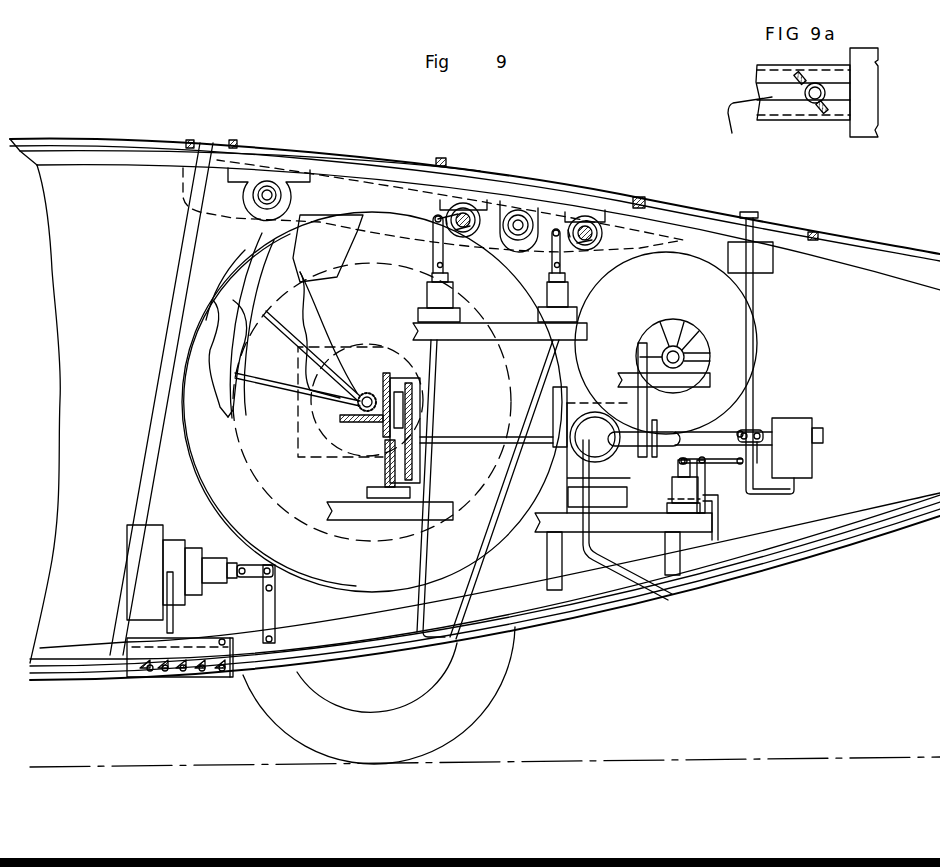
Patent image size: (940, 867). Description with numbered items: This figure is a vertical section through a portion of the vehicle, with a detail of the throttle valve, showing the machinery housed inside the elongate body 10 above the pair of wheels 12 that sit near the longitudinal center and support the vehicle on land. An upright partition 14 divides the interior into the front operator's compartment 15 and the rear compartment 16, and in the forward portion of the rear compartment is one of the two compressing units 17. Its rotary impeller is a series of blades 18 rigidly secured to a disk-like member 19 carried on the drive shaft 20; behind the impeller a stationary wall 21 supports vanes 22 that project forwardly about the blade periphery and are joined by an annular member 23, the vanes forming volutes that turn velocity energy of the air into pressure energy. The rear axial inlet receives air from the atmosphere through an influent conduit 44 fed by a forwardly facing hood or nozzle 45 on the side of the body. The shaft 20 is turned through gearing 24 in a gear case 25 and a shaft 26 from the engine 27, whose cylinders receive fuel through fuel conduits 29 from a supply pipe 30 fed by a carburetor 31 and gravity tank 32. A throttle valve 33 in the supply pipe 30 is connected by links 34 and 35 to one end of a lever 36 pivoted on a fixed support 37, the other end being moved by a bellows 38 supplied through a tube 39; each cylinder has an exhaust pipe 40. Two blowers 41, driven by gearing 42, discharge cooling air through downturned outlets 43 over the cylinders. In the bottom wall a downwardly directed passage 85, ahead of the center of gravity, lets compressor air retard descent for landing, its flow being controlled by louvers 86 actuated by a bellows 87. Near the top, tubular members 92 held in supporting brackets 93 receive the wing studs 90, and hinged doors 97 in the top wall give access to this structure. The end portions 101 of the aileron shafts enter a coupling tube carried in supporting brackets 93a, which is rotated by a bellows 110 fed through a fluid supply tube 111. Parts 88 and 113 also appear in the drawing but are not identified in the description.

In FIG. 9, the body 10 is at (887, 540).
In FIG. 9, the wheels 12 is at (477, 678).
In FIG. 9, the upright partition 14 is at (190, 250).
In FIG. 9, the operator's compartment 15 is at (70, 495).
In FIG. 9, the rear compartment 16 is at (172, 490).
In FIG. 9, the compressing unit 17 is at (200, 415).
In FIG. 9, the blades 18 is at (305, 342).
In FIG. 9, the disk-like member 19 is at (317, 298).
In FIG. 9, the drive shaft 20 is at (362, 410).
In FIG. 9, the stationary wall 21 is at (238, 292).
In FIG. 9, the vanes 22 is at (287, 280).
In FIG. 9, the annular member 23 is at (223, 343).
In FIG. 9, the gearing 24 is at (410, 418).
In FIG. 9, the gear case 25 is at (410, 390).
In FIG. 9, the shaft 26 is at (482, 440).
In FIG. 9, the engine 27 is at (574, 452).
In FIG. 9, the fuel conduits 29 is at (641, 448).
In FIG. 9, the supply pipe 30 is at (722, 434).
In FIG. 9a, the supply pipe 30 is at (790, 120).
In FIG. 9, the carburetor 31 is at (802, 423).
In FIG. 9a, the carburetor 31 is at (865, 140).
In FIG. 9, the gravity tank 32 is at (765, 263).
In FIG. 9, the throttle valve 33 is at (757, 446).
In FIG. 9a, the throttle valve 33 is at (821, 108).
In FIG. 9, the link 34 is at (759, 430).
In FIG. 9a, the link 34 is at (748, 126).
In FIG. 9, the link 35 is at (740, 465).
In FIG. 9, the lever 36 is at (722, 464).
In FIG. 9, the fixed support 37 is at (703, 493).
In FIG. 9, the bellows 38 is at (678, 486).
In FIG. 9, the tube 39 is at (720, 526).
In FIG. 9, the exhaust pipe 40 is at (606, 605).
In FIG. 9, the blowers 41 is at (727, 348).
In FIG. 9, the gearing 42 is at (674, 345).
In FIG. 9, the downturned outlets 43 is at (595, 378).
In FIG. 9, the influent conduit 44 is at (378, 363).
In FIG. 9, the hood or nozzle 45 is at (300, 430).
In FIG. 9, the passage 85 is at (130, 672).
In FIG. 9, the louvers 86 is at (204, 672).
In FIG. 9, the bellows 87 is at (213, 568).
In FIG. 9, the pawl pins 88 is at (165, 672).
In FIG. 9, the studs 90 is at (263, 185).
In FIG. 9, the tubular members 92 is at (270, 188).
In FIG. 9, the supporting brackets 93 is at (282, 193).
In FIG. 9, the supporting brackets 93a is at (453, 247).
In FIG. 9, the doors 97 is at (507, 170).
In FIG. 9, the end portions 101 is at (436, 217).
In FIG. 9, the bellows 110 is at (440, 300).
In FIG. 9, the fluid supply tube 111 is at (428, 552).
In FIG. 9, the skin tab 113 is at (640, 205).